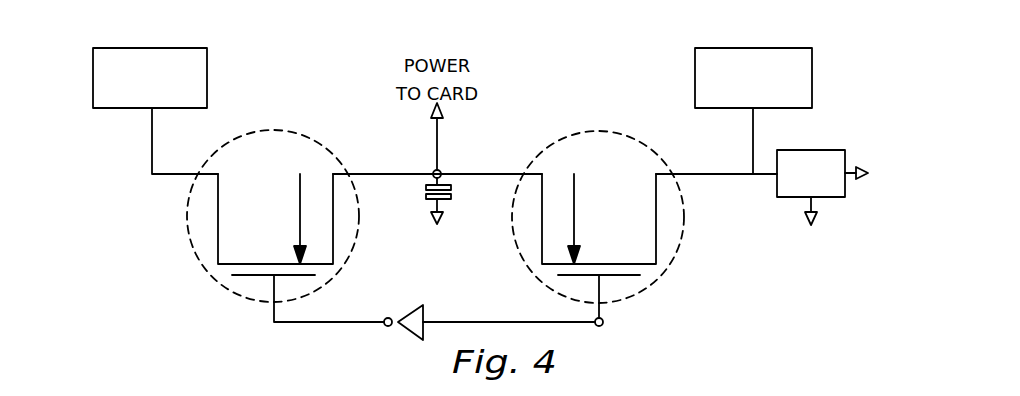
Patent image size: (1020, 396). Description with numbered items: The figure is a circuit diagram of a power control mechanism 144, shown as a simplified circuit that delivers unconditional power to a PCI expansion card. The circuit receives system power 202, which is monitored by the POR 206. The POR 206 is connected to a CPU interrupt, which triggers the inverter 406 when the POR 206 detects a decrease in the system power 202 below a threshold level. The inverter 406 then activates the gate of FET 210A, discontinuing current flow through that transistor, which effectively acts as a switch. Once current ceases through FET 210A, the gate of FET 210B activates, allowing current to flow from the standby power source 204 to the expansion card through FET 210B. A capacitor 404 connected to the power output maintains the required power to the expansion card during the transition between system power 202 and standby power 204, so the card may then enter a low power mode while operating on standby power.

The power control mechanism 144 is at (340, 42).
The system power 202 is at (777, 52).
The standby power source 204 is at (122, 52).
The POR 206 is at (817, 155).
The FET 210A is at (593, 127).
The FET 210B is at (268, 128).
The capacitor 404 is at (452, 190).
The inverter 406 is at (421, 312).